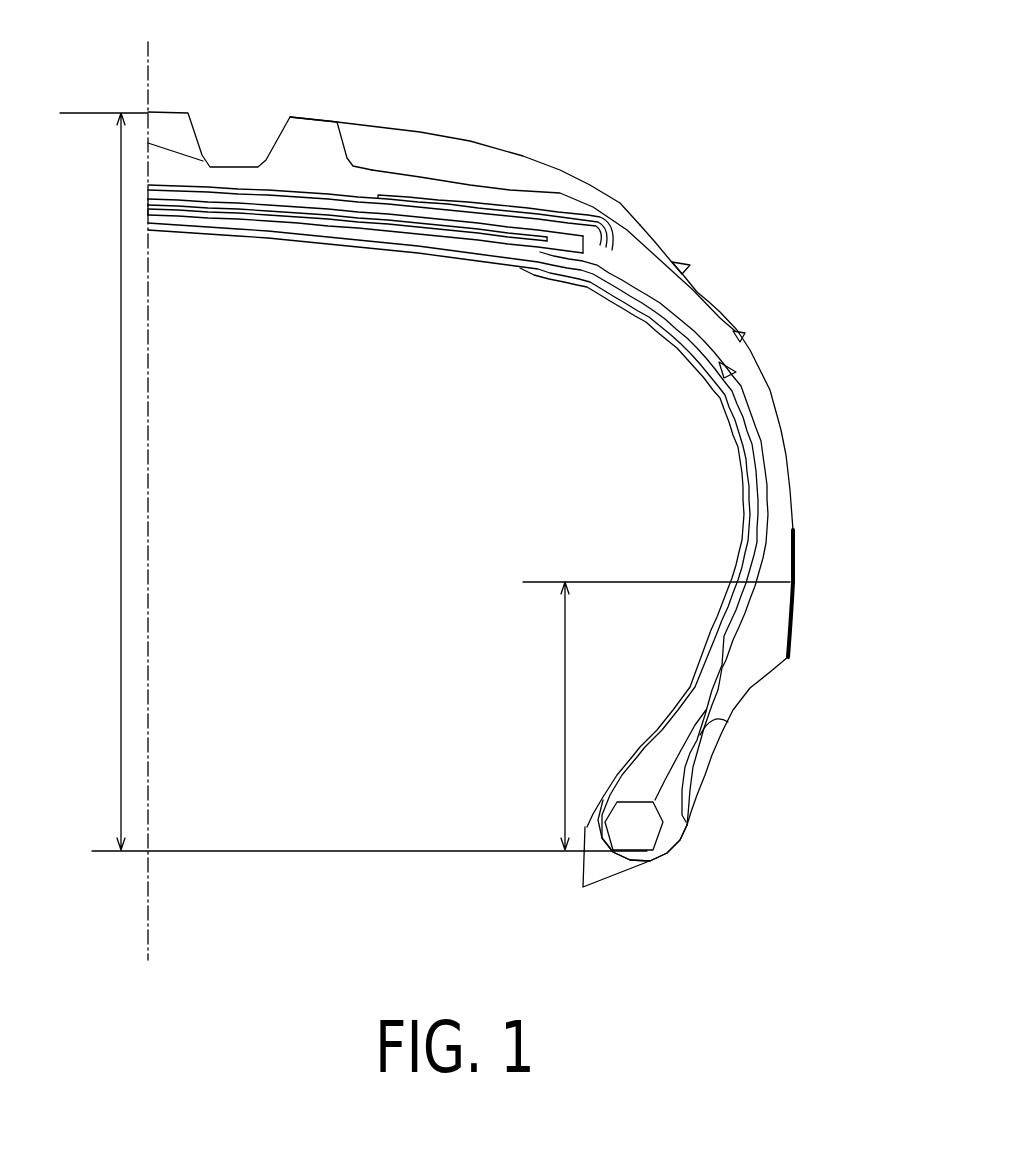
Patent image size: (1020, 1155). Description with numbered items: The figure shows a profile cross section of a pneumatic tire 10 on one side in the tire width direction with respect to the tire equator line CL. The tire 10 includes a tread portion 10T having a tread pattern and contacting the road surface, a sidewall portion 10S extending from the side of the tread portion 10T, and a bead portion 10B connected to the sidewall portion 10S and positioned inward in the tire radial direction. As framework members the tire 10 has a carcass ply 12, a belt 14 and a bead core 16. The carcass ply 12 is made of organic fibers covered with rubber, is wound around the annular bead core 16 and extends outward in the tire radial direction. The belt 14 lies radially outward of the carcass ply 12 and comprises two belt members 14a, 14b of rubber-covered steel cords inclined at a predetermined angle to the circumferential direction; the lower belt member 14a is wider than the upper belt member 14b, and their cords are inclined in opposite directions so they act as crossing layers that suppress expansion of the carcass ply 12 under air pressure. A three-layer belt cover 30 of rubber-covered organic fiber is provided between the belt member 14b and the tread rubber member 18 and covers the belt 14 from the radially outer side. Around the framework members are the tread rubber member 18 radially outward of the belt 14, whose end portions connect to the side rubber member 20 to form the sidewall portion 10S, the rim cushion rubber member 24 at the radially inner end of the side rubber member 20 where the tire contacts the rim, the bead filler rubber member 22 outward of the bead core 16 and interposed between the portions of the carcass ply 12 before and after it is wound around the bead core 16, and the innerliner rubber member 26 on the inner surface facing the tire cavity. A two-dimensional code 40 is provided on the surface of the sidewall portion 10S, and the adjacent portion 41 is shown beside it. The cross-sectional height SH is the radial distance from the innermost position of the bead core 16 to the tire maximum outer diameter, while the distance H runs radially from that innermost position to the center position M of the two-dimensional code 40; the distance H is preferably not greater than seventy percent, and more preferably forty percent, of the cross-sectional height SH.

The pneumatic tire 10 is at (510, 482).
The tread portion 10T is at (355, 108).
The sidewall portion 10S is at (795, 384).
The bead portion 10B is at (714, 818).
The carcass ply 12 is at (606, 274).
The belt 14 is at (365, 268).
The belt member 14a is at (387, 222).
The belt member 14b is at (410, 222).
The bead core 16 is at (640, 838).
The tread rubber member 18 is at (497, 190).
The side rubber member 20 is at (774, 426).
The bead filler rubber member 22 is at (660, 772).
The rim cushion rubber member 24 is at (698, 750).
The innerliner rubber member 26 is at (626, 298).
The belt cover 30 is at (462, 221).
The two-dimensional code 40 is at (797, 540).
The second sidewall protrusion 41 is at (795, 628).
The tire equator line CL is at (147, 487).
The cross-sectional height SH is at (353, 482).
The distance H is at (556, 716).
The center position M is at (669, 584).